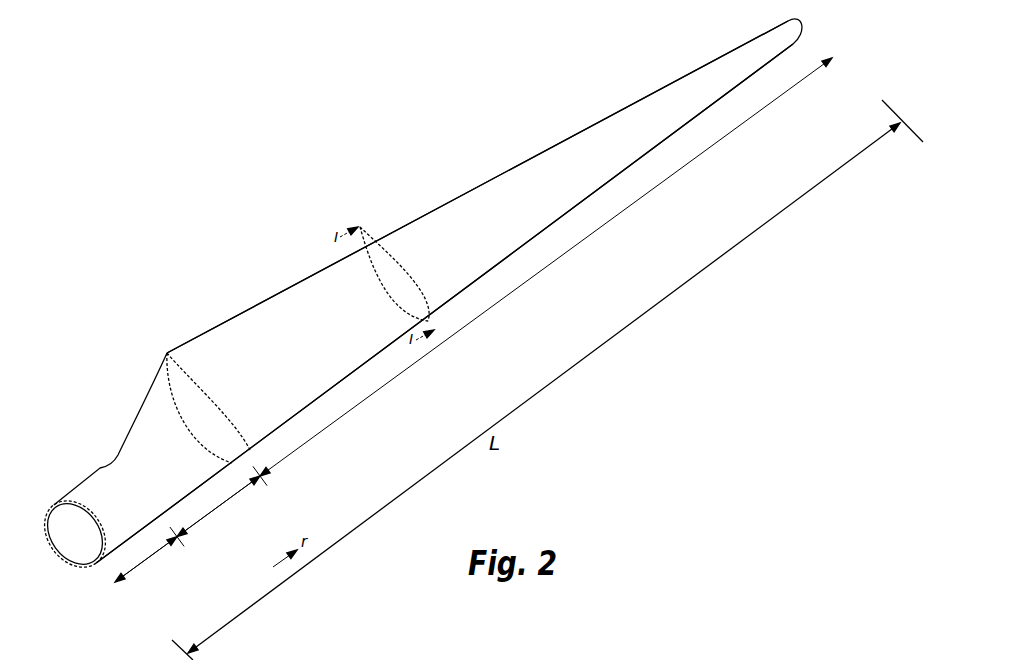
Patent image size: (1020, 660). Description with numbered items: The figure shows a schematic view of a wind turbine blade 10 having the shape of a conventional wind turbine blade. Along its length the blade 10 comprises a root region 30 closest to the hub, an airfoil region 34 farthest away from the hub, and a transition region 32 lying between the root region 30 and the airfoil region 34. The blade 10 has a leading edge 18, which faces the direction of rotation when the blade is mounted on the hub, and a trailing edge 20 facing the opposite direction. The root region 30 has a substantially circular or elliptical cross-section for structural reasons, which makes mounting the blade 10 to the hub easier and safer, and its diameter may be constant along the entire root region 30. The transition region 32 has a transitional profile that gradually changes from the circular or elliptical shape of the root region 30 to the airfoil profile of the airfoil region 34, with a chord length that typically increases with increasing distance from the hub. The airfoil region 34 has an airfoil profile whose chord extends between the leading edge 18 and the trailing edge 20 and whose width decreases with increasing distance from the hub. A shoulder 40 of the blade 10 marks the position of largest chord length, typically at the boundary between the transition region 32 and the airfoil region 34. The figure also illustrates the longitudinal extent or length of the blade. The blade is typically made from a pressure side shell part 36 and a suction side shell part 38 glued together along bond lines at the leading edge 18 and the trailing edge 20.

The wind turbine blade 10 is at (292, 192).
The leading edge 18 is at (575, 208).
The trailing edge 20 is at (398, 227).
The root region 30 is at (153, 557).
The transition region 32 is at (223, 503).
The airfoil region 34 is at (492, 306).
The pressure side shell part 36 is at (72, 498).
The suction side shell part 38 is at (47, 507).
The shoulder 40 is at (168, 352).